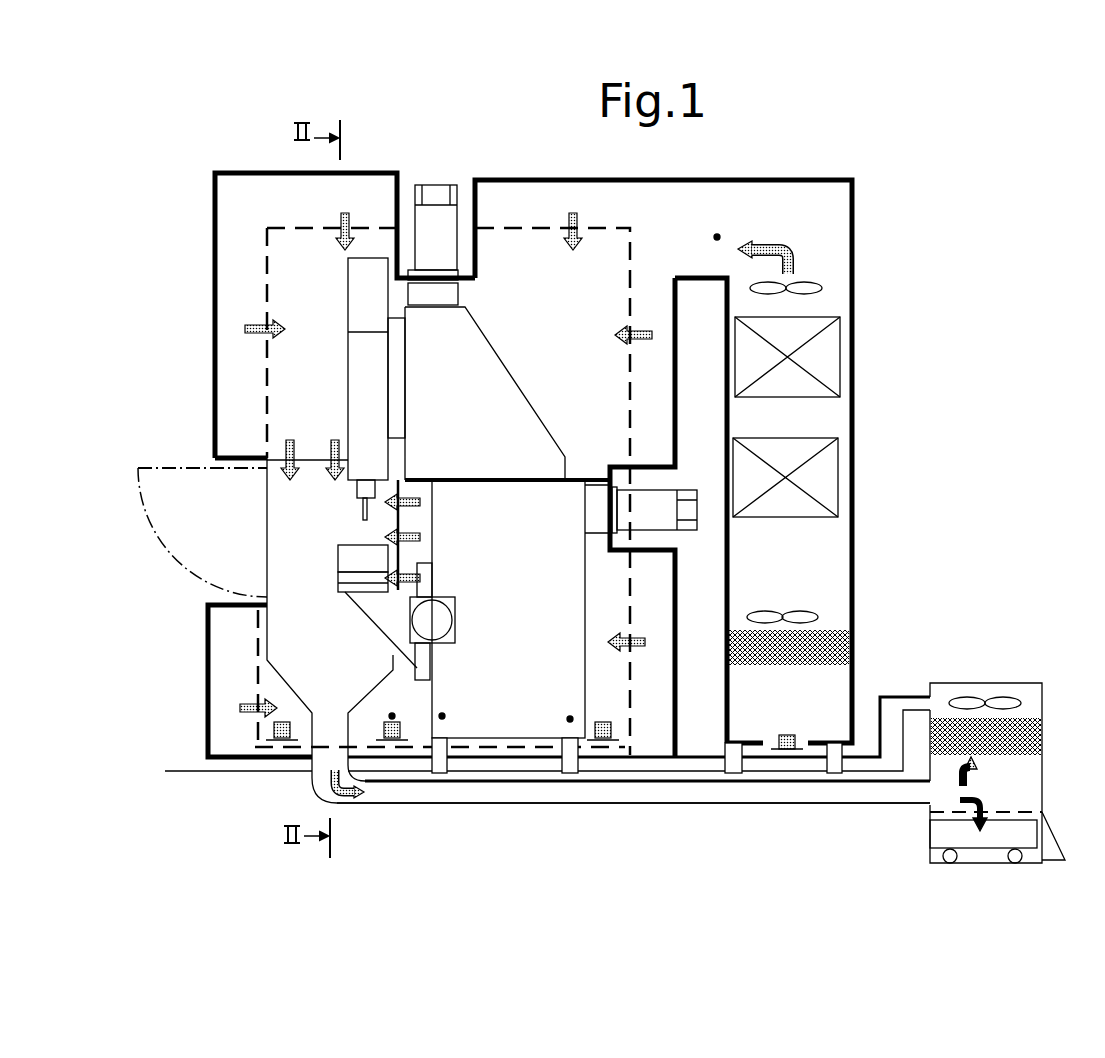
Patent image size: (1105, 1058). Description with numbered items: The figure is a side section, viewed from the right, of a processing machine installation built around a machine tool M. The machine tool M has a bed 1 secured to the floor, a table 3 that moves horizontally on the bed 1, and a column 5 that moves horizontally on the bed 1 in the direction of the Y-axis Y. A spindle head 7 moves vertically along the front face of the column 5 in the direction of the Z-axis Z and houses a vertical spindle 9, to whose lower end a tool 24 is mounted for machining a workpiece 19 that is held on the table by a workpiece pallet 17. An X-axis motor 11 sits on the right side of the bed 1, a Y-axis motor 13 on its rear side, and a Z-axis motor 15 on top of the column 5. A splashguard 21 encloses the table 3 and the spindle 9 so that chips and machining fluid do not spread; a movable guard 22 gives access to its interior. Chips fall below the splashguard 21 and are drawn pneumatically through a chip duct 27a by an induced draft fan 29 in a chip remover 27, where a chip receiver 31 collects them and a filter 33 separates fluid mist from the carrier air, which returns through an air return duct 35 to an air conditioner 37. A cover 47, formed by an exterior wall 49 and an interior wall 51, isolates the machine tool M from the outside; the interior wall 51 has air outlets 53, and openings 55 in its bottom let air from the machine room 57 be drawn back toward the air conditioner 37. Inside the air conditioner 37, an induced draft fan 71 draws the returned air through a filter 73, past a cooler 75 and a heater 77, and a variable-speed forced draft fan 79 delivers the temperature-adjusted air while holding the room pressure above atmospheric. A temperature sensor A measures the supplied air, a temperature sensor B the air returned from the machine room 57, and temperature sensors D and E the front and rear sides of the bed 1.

The bed 1 is at (526, 643).
The table 3 is at (383, 612).
The column 5 is at (500, 372).
The spindle head 7 is at (355, 372).
The spindle 9 is at (356, 492).
The X-axis motor 11 is at (440, 620).
The Y-axis motor 13 is at (690, 512).
The Z-axis motor 15 is at (433, 185).
The workpiece pallet 17 is at (340, 577).
The workpiece 19 is at (340, 558).
The splashguard 21 is at (303, 458).
The movable guard 22 is at (265, 528).
The tool 24 is at (362, 515).
The chip remover 27 is at (983, 740).
The chip duct 27a is at (640, 790).
The induced draft fan 29 is at (970, 705).
The chip receiver 31 is at (940, 835).
The filter 33 is at (1025, 740).
The air return duct 35 is at (697, 757).
The air conditioner 37 is at (819, 527).
The cover 47 is at (367, 170).
The exterior wall 49 is at (240, 172).
The interior wall 51 is at (540, 228).
The air outlets 53 is at (312, 228).
The openings 55 is at (393, 750).
The machine room 57 is at (325, 311).
The induced draft fan 71 is at (808, 618).
The filter 73 is at (838, 652).
The cooler 75 is at (823, 480).
The heater 77 is at (825, 360).
The forced draft fan 79 is at (822, 290).
The temperature sensor A is at (715, 223).
The temperature sensor B is at (394, 702).
The temperature sensor D is at (448, 702).
The temperature sensor E is at (562, 705).
The machine tool M is at (497, 316).
The Y-axis Y is at (570, 432).
The Z-axis Z is at (396, 356).